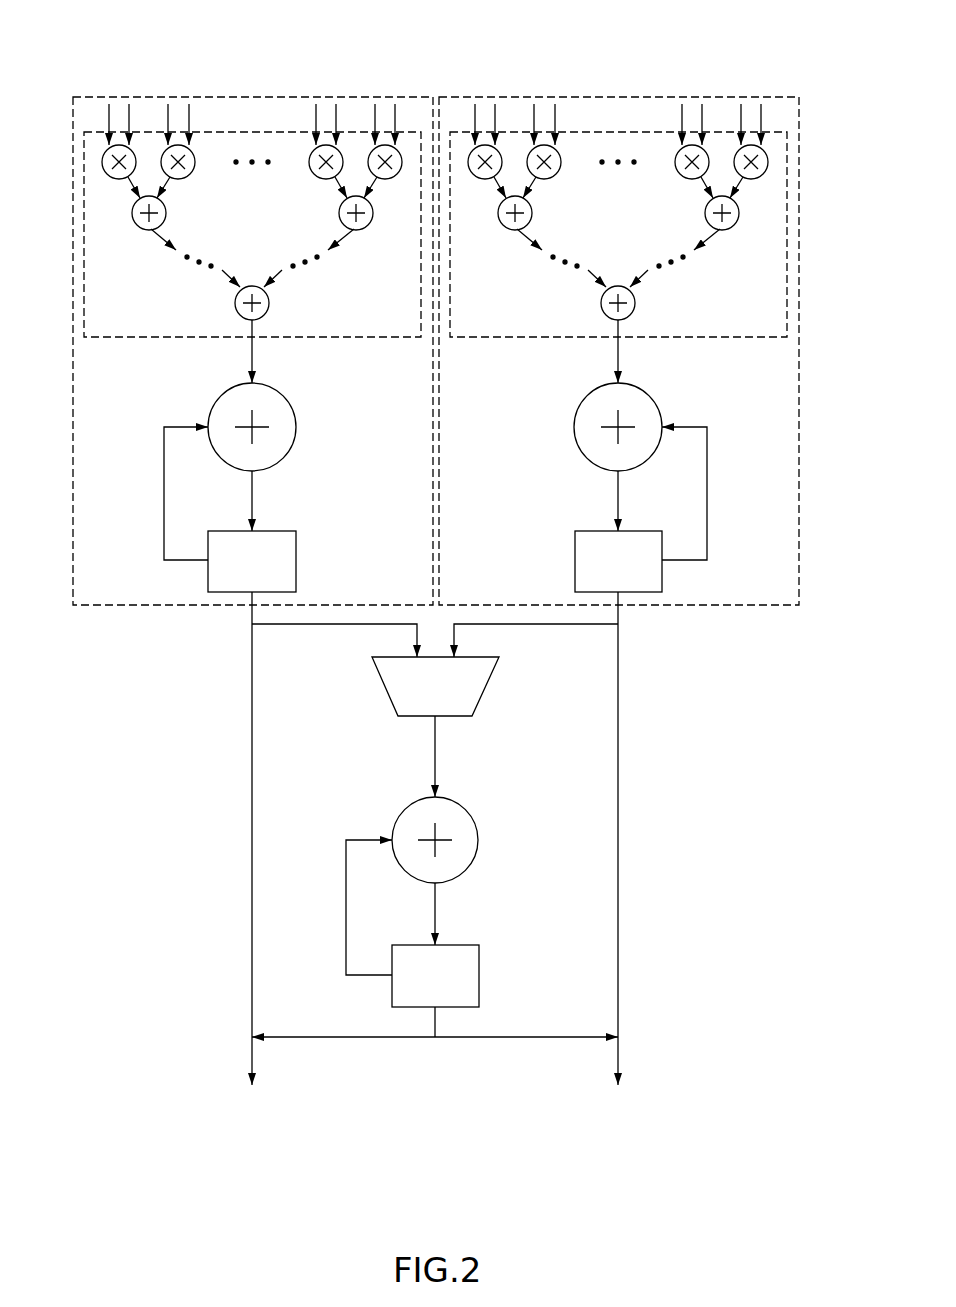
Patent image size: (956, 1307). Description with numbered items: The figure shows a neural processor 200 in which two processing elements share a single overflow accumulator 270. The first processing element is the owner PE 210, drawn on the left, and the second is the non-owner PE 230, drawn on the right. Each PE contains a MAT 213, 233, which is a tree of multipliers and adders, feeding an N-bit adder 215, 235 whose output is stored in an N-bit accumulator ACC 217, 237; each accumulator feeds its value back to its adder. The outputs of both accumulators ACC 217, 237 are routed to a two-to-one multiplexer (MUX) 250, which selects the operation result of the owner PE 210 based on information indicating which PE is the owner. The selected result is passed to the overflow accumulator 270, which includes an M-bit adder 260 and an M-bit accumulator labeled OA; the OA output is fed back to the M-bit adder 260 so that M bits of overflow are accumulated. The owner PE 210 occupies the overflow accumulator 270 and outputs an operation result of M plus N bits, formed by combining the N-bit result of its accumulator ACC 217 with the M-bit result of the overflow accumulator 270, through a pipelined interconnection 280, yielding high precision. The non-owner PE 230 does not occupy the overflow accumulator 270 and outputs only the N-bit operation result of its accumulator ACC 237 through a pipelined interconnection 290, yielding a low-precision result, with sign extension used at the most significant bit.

The neural processor 200 is at (439, 50).
The owner PE 210 is at (252, 97).
The MAT 213 is at (252, 243).
The adder 215 is at (296, 427).
The accumulator ACC 217 is at (296, 560).
The non-owner PE 230 is at (618, 97).
The MAT 233 is at (618, 243).
The adder 235 is at (575, 427).
The accumulator ACC 237 is at (575, 560).
The 2-to-1 multiplexer (MUX) 250 is at (487, 685).
The M-bit adder 260 is at (478, 840).
The overflow accumulator 270 is at (479, 975).
The pipelined interconnection 280 is at (252, 829).
The pipelined interconnection 290 is at (619, 829).